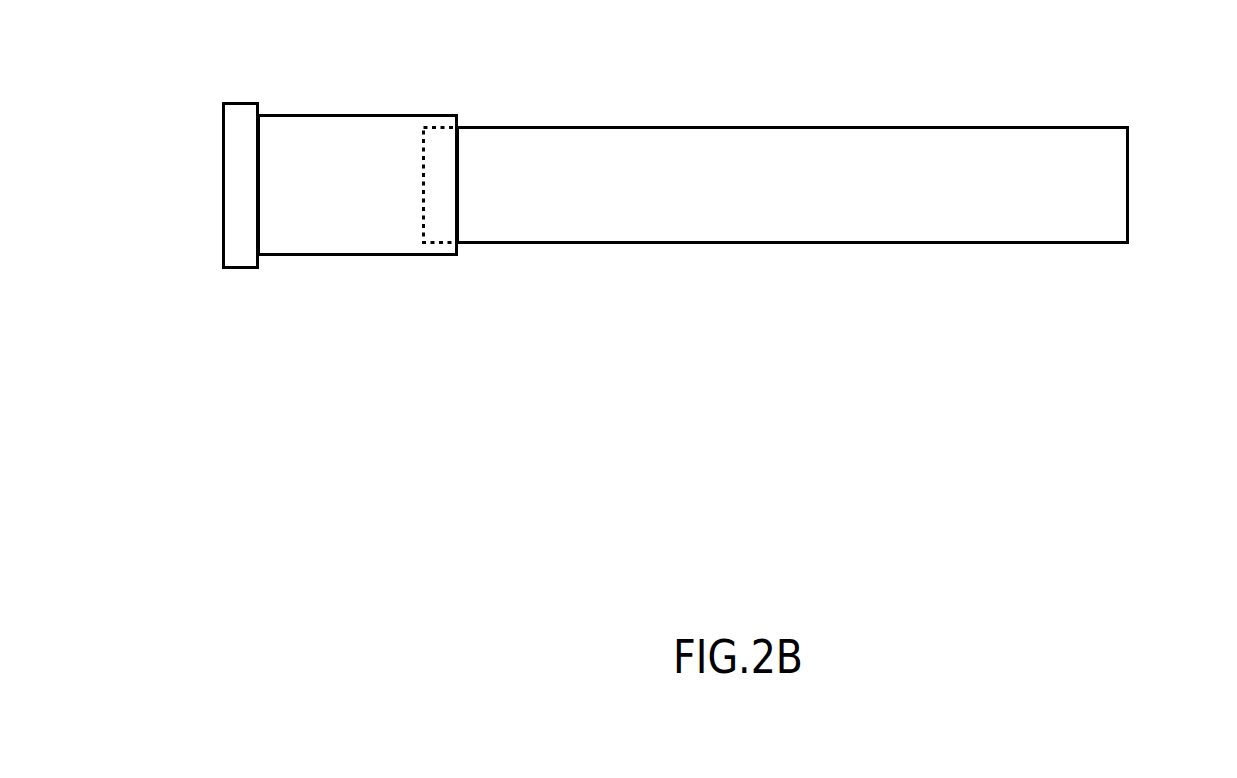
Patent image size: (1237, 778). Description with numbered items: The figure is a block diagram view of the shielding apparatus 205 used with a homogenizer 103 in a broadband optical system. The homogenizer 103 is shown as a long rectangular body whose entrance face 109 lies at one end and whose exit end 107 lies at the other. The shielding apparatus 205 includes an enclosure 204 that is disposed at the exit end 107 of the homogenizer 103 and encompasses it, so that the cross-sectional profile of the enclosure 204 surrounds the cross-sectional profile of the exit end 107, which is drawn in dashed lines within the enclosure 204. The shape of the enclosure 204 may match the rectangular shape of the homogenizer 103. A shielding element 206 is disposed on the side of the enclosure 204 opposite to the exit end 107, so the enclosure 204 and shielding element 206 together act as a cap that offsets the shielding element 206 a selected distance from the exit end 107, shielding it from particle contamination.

The shielding apparatus 205 is at (207, 88).
The shielding element 206 is at (240, 102).
The enclosure 204 is at (349, 114).
The exit end 107 is at (422, 192).
The homogenizer 103 is at (1033, 124).
The entrance face 109 is at (1130, 190).